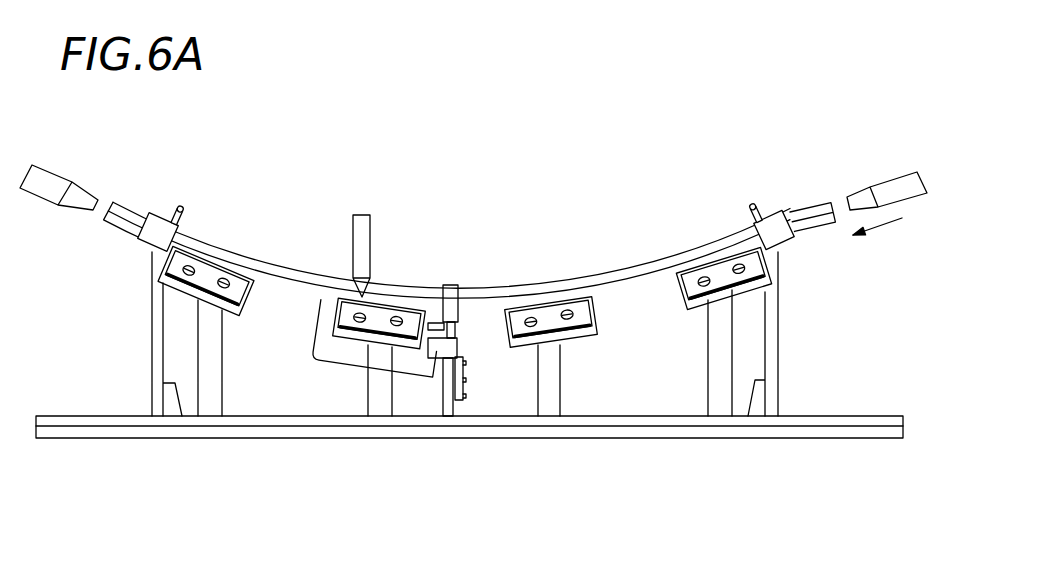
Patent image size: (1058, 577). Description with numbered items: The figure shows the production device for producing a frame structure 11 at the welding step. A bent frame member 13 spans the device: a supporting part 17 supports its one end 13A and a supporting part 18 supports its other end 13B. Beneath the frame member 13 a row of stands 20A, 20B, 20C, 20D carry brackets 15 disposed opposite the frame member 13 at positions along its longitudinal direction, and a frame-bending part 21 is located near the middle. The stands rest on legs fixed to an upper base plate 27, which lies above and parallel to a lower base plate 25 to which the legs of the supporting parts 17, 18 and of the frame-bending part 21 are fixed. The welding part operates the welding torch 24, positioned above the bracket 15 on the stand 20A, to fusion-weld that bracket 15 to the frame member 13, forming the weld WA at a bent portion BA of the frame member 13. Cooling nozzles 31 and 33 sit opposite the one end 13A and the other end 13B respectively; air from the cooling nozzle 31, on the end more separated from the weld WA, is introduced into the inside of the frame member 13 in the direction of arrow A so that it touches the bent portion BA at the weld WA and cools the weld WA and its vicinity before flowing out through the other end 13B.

The frame structure 11 is at (276, 228).
The frame member 13 is at (481, 292).
The one end of the frame member 13A is at (812, 204).
The other end of the frame member 13B is at (122, 197).
The bracket 15 is at (221, 268).
The supporting part 17 is at (772, 212).
The supporting part 18 is at (170, 210).
The stand 20A is at (331, 336).
The stand 20B is at (231, 318).
The stand 20C is at (577, 347).
The stand 20D is at (702, 312).
The frame-bending part 21 is at (427, 348).
The welding torch 24 is at (362, 212).
The lower base plate 25 is at (832, 438).
The upper base plate 27 is at (834, 416).
The cooling nozzle 31 is at (892, 178).
The cooling nozzle 33 is at (60, 177).
The arrow A is at (877, 236).
The bent portion BA is at (352, 368).
The weld WA is at (388, 300).